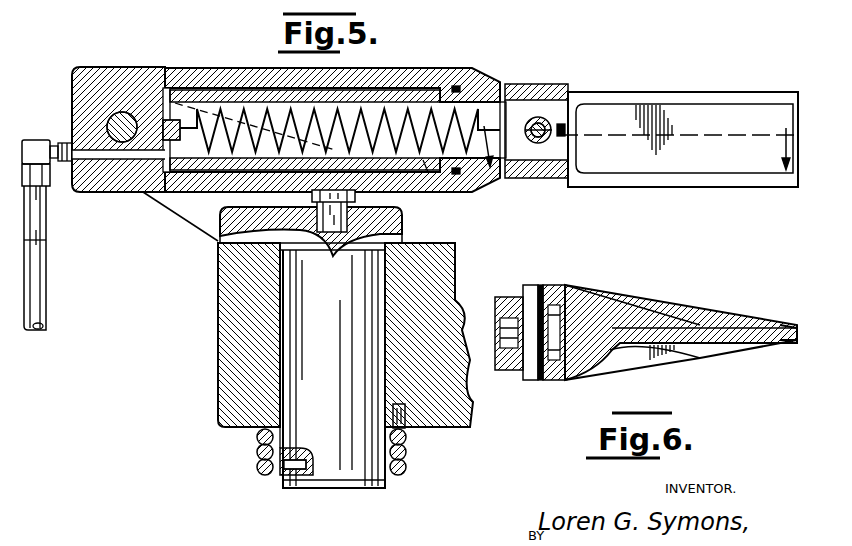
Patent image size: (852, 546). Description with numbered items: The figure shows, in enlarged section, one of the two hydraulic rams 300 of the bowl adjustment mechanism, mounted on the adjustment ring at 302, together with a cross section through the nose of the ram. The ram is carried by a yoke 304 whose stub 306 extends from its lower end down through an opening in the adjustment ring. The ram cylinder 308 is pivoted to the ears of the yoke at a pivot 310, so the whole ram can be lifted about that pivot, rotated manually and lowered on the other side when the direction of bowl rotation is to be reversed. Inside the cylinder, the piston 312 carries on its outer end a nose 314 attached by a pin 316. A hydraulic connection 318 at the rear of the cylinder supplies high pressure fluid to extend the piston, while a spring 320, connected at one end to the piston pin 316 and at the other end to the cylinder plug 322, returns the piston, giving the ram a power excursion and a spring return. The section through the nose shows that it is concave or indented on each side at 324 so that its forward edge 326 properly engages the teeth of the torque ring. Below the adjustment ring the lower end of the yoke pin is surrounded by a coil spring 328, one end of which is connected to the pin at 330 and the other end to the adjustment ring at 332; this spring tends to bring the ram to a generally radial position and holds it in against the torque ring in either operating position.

In FIG. 5, the ram 300 is at (408, 54).
In FIG. 5, the adjustment ring mounting 302 is at (284, 346).
In FIG. 5, the yoke 304 is at (200, 218).
In FIG. 5, the stub 306 is at (344, 462).
In FIG. 5, the ram cylinder 308 is at (460, 78).
In FIG. 5, the pivot 310 is at (112, 124).
In FIG. 5, the piston 312 is at (185, 90).
In FIG. 5, the nose 314 is at (722, 114).
In FIG. 6, the nose 314 is at (700, 316).
In FIG. 5, the pin 316 is at (538, 118).
In FIG. 6, the pin 316 is at (540, 300).
In FIG. 5, the hydraulic connection 318 is at (42, 303).
In FIG. 5, the spring 320 is at (423, 162).
In FIG. 5, the cylinder plug 322 is at (78, 92).
In FIG. 6, the concave indentation 324 is at (612, 322).
In FIG. 6, the forward edge 326 is at (790, 325).
In FIG. 5, the coil spring 328 is at (408, 468).
In FIG. 5, the spring-to-pin connection 330 is at (284, 478).
In FIG. 5, the spring-to-ring connection 332 is at (408, 426).